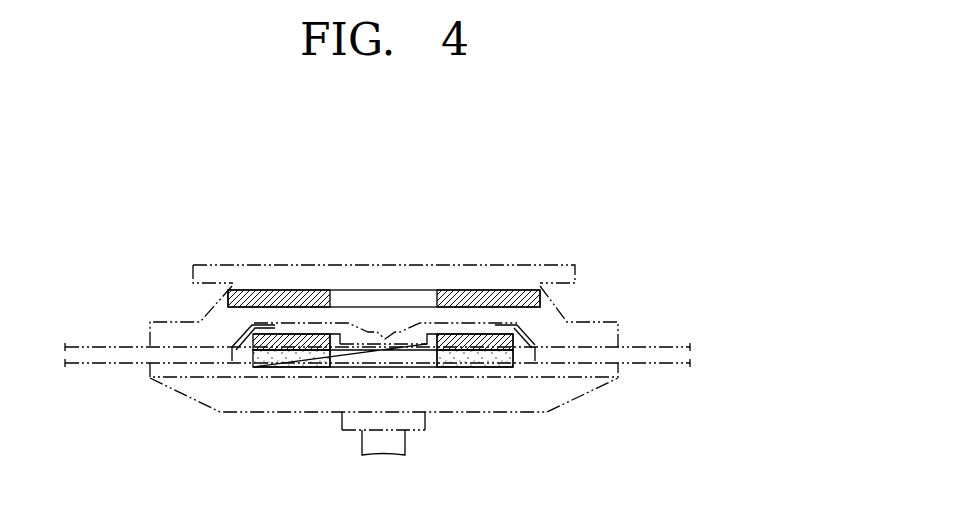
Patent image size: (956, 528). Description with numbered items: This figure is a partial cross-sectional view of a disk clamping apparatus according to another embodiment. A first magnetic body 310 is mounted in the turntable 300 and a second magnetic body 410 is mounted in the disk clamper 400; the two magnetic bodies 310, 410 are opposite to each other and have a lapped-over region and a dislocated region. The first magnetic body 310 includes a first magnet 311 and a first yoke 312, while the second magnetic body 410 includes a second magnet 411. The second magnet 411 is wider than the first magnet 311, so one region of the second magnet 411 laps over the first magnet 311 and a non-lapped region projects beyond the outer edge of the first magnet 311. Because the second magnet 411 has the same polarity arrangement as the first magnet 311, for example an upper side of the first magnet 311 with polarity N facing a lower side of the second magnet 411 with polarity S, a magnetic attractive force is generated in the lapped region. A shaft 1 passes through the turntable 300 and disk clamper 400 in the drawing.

The rotating shaft 1 is at (670, 347).
The turntable 300 is at (590, 390).
The first magnetic body 310 is at (596, 432).
The first magnet 311 is at (510, 345).
The first yoke 312 is at (508, 352).
The disk clamper 400 is at (573, 270).
The second magnetic body 410 is at (566, 246).
The second magnet 411 is at (462, 290).